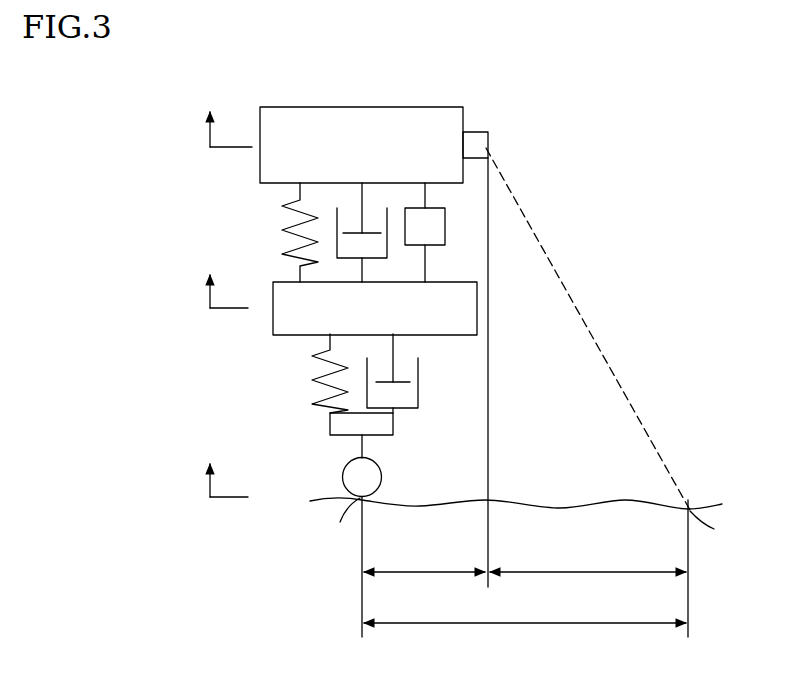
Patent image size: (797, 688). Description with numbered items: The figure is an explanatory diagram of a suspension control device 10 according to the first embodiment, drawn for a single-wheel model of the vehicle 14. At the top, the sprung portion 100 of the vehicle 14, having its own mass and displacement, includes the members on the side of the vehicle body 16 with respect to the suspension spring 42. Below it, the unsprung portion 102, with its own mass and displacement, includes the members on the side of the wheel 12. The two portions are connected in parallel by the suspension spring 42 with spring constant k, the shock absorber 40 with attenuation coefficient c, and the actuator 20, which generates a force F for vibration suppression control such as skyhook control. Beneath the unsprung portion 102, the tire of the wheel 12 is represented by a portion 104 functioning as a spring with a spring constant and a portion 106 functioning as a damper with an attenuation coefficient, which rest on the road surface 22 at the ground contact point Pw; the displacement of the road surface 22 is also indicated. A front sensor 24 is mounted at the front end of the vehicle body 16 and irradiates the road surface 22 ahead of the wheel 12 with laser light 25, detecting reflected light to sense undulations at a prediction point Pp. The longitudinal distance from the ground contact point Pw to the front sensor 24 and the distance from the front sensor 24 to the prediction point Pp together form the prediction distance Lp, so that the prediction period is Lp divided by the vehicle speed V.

The suspension control device 10 is at (554, 82).
The wheel 12 is at (212, 362).
The vehicle 14 is at (279, 102).
The vehicle body 16 is at (361, 145).
The actuator 20 is at (444, 232).
The road surface 22 is at (543, 505).
The front sensor 24 is at (476, 130).
The laser light 25 is at (588, 324).
The shock absorber 40 is at (370, 228).
The suspension spring 42 is at (284, 222).
The sprung portion 100 is at (358, 106).
The unsprung portion 102 is at (478, 306).
The tire spring portion 104 is at (312, 368).
The tire damper portion 106 is at (418, 395).